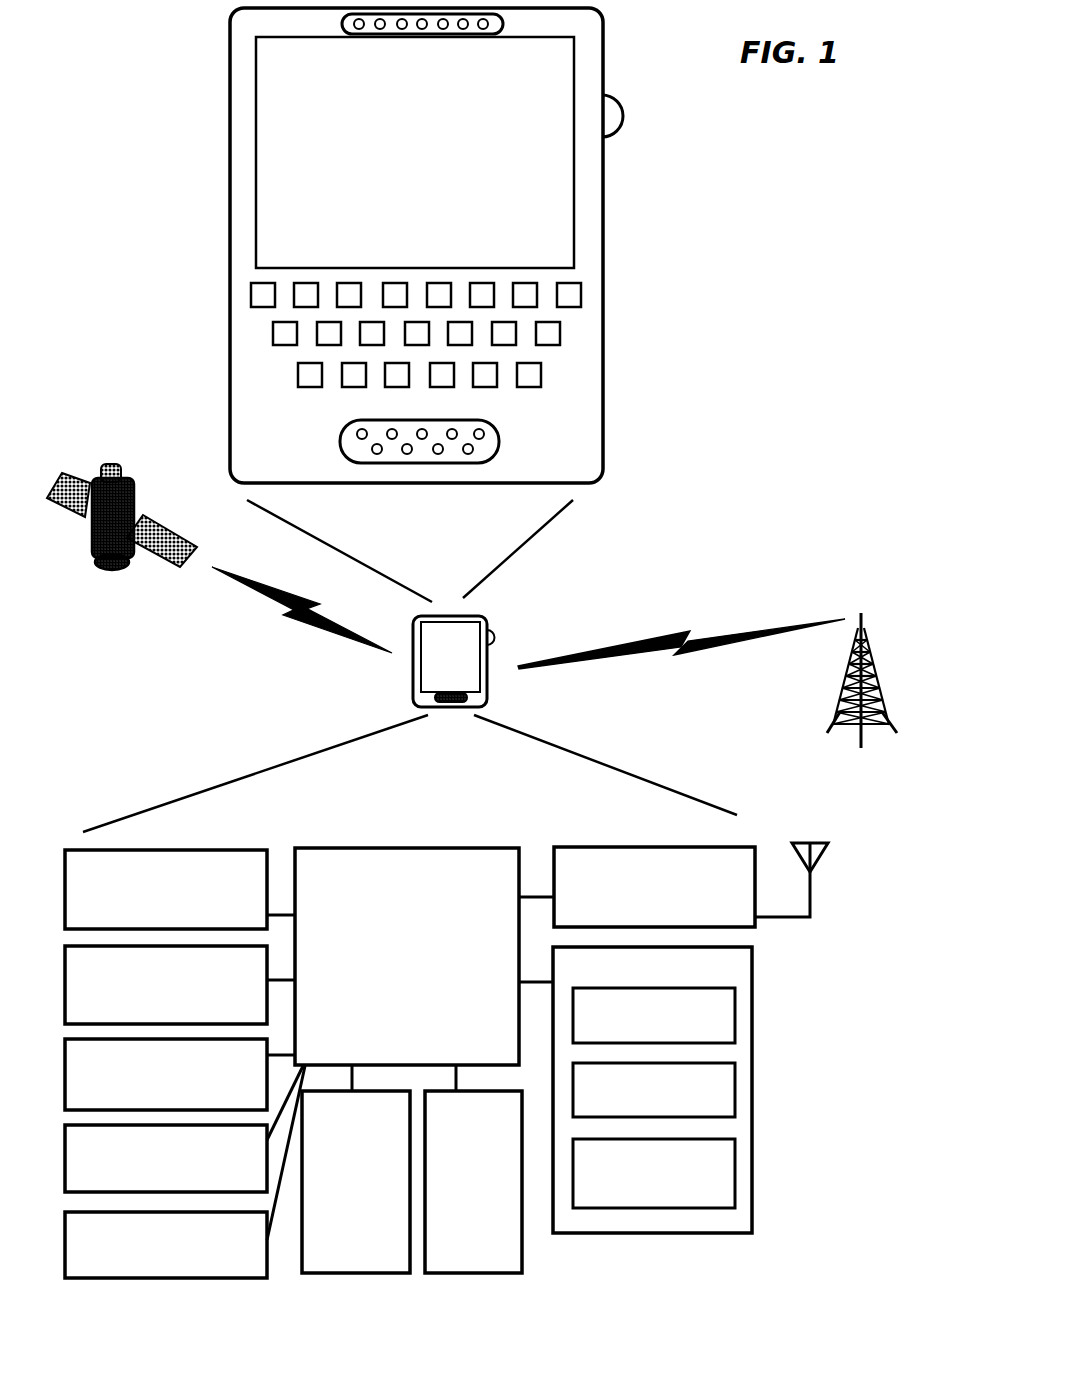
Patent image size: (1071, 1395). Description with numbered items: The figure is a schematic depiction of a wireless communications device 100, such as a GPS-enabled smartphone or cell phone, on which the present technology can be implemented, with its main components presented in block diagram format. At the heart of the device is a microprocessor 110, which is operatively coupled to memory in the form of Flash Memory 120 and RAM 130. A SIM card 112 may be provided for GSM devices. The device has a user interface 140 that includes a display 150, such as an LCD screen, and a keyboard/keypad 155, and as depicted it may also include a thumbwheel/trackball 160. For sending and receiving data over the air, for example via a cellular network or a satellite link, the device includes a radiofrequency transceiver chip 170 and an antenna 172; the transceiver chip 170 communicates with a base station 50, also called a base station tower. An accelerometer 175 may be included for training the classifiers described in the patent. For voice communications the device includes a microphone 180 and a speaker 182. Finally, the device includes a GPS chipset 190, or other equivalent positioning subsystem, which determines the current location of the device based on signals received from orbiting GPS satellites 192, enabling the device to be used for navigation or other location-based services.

The base station 50 is at (833, 714).
The wireless communications device 100 is at (603, 250).
The microprocessor 110 is at (407, 956).
The SIM card 112 is at (166, 1158).
The Flash Memory 120 is at (356, 1182).
The RAM 130 is at (473, 1182).
The user interface 140 is at (752, 973).
The display 150 is at (538, 186).
The keyboard/keypad 155 is at (573, 333).
The thumbwheel/trackball 160 is at (619, 119).
The RF transceiver chip 170 is at (654, 887).
The antenna 172 is at (813, 895).
The accelerometer 175 is at (166, 1245).
The microphone 180 is at (499, 443).
The speaker 182 is at (342, 22).
The GPS chipset 190 is at (166, 1074).
The GPS satellites 192 is at (108, 573).